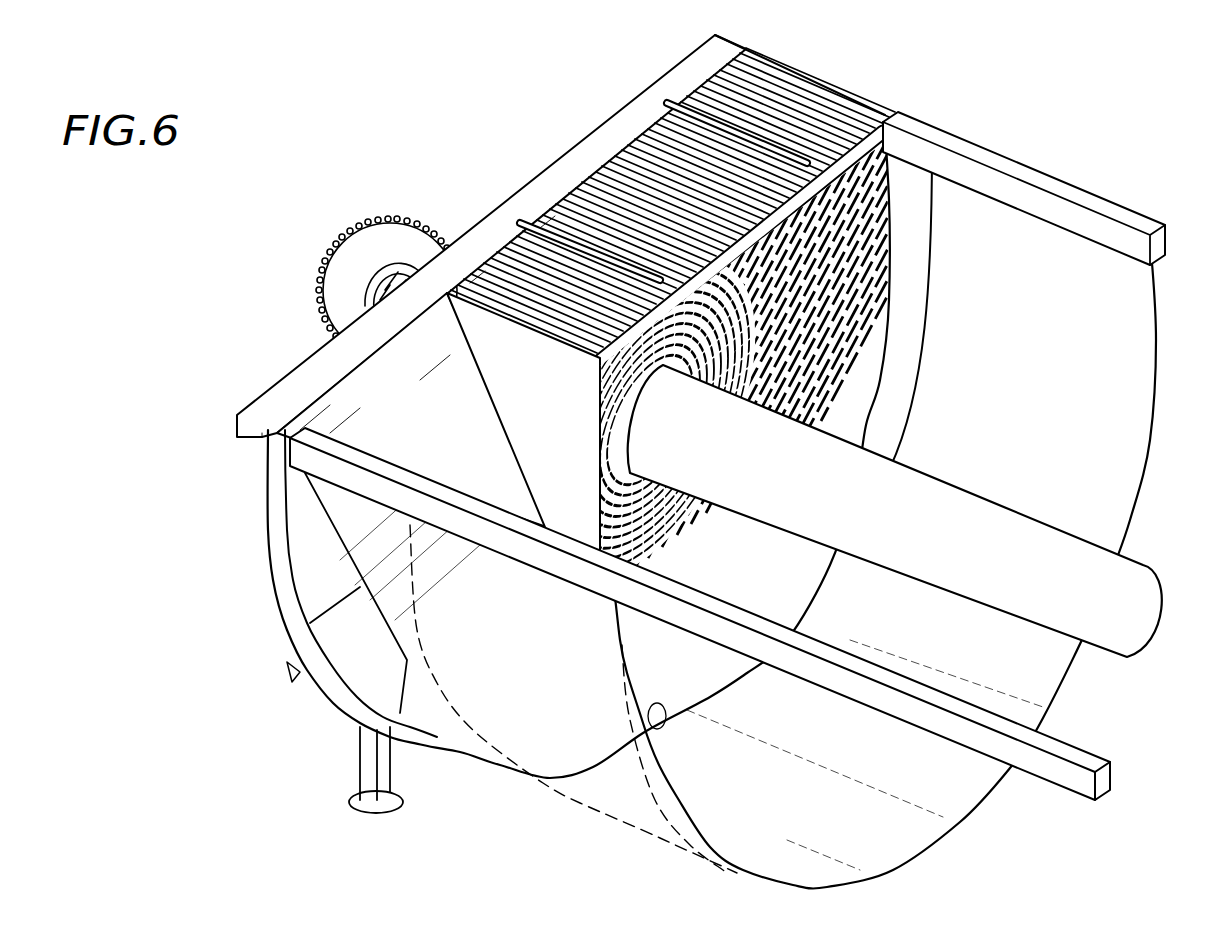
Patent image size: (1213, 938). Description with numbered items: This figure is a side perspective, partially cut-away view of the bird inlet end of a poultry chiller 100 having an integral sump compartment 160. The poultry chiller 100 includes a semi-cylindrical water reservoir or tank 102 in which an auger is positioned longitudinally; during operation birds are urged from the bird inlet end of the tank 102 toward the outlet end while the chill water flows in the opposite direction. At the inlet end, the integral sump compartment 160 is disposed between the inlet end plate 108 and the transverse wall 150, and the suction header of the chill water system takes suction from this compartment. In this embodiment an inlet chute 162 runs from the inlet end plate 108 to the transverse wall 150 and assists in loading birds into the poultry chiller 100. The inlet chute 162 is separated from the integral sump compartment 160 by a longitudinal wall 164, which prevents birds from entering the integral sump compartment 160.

The poultry chiller 100 is at (198, 622).
The tank 102 is at (990, 662).
The inlet end plate 108 is at (382, 664).
The transverse wall 150 is at (905, 337).
The integral sump compartment 160 is at (692, 528).
The inlet chute 162 is at (450, 430).
The longitudinal wall 164 is at (570, 401).